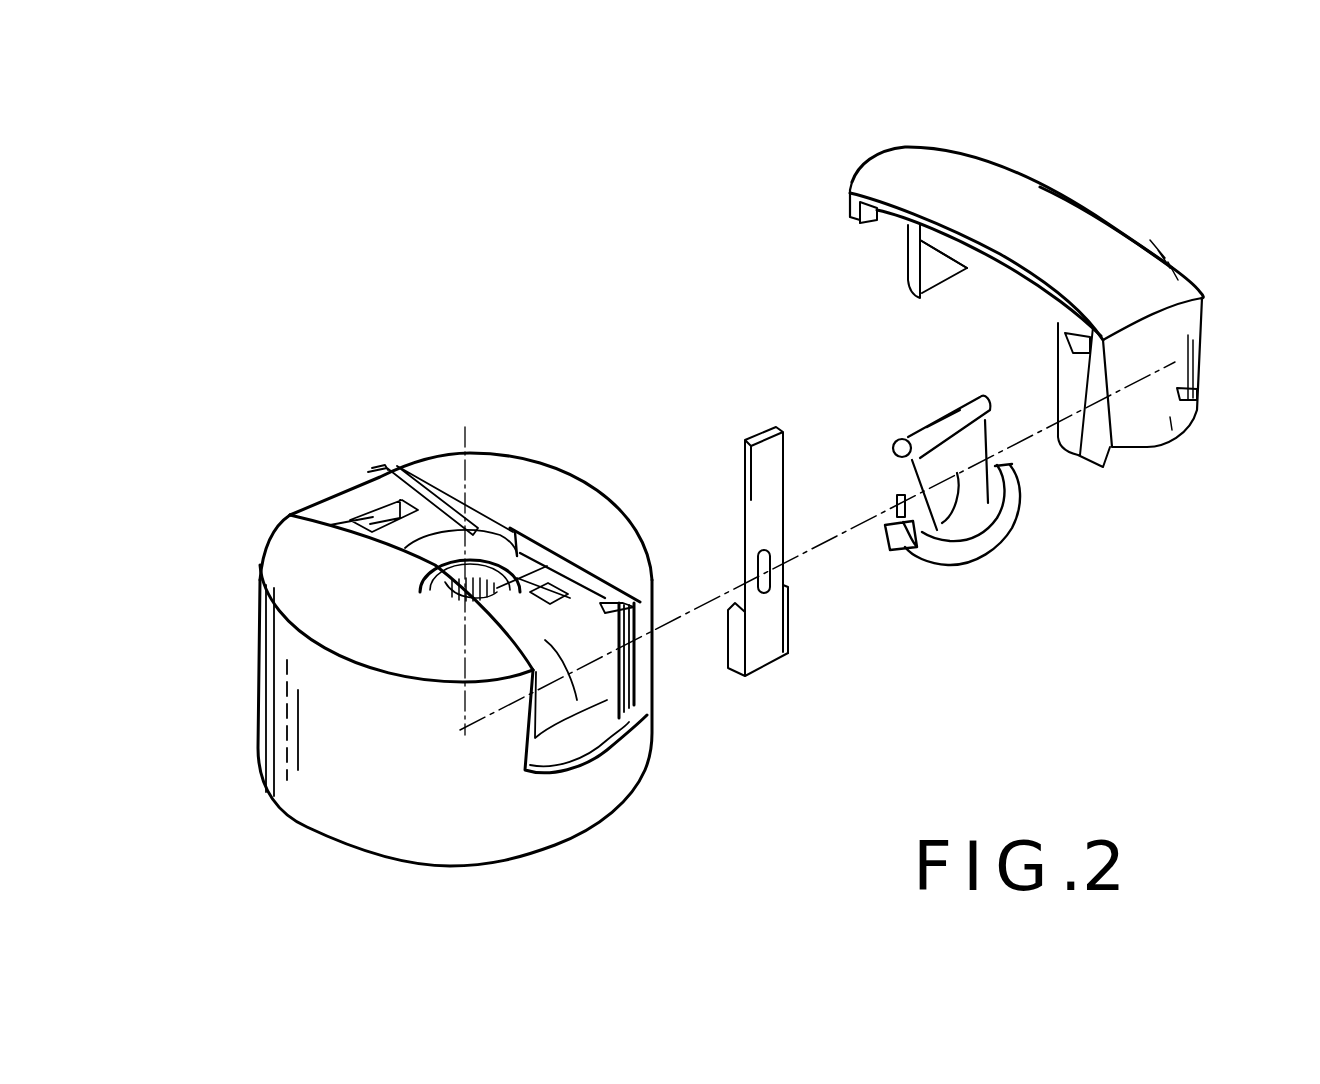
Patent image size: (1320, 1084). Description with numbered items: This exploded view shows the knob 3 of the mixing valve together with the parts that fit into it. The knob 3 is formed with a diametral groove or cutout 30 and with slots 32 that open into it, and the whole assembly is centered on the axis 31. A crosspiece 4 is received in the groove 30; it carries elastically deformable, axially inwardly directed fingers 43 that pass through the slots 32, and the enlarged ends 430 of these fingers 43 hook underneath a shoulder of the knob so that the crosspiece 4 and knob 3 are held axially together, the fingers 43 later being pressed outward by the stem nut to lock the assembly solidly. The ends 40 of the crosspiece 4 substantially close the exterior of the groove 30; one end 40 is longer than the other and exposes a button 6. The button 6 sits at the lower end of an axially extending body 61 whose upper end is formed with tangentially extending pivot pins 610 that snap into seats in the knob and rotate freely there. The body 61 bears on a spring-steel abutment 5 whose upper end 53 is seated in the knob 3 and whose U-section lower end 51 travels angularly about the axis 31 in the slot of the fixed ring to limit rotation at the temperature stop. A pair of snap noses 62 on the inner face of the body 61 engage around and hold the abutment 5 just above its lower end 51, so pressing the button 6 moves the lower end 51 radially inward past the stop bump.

The knob 3 is at (297, 743).
The diametral groove 30 is at (440, 500).
The axis 31 is at (467, 437).
The slots 32 is at (367, 520).
The crosspiece 4 is at (1025, 340).
The ends 40 is at (857, 217).
The fingers 43 is at (908, 246).
The enlarged ends 430 is at (905, 276).
The abutment 5 is at (746, 594).
The lower end 51 is at (733, 645).
The upper end 53 is at (760, 468).
The button 6 is at (926, 501).
The body 61 is at (935, 535).
The snap noses 62 is at (895, 505).
The pivot pins 610 is at (983, 393).